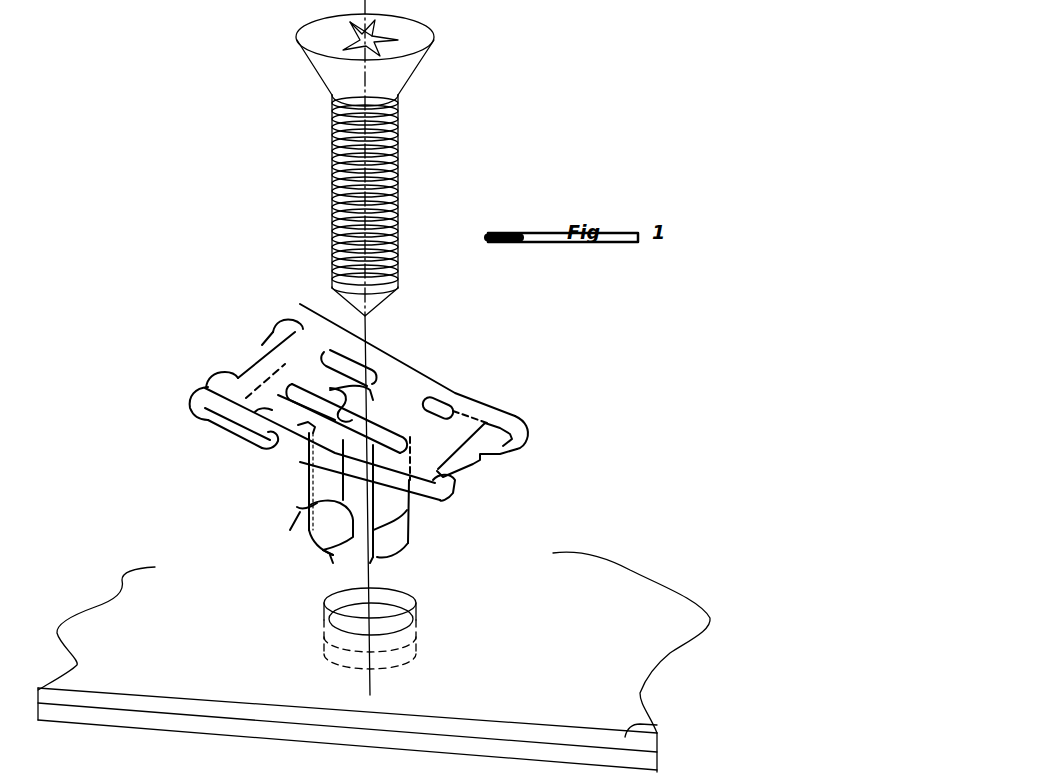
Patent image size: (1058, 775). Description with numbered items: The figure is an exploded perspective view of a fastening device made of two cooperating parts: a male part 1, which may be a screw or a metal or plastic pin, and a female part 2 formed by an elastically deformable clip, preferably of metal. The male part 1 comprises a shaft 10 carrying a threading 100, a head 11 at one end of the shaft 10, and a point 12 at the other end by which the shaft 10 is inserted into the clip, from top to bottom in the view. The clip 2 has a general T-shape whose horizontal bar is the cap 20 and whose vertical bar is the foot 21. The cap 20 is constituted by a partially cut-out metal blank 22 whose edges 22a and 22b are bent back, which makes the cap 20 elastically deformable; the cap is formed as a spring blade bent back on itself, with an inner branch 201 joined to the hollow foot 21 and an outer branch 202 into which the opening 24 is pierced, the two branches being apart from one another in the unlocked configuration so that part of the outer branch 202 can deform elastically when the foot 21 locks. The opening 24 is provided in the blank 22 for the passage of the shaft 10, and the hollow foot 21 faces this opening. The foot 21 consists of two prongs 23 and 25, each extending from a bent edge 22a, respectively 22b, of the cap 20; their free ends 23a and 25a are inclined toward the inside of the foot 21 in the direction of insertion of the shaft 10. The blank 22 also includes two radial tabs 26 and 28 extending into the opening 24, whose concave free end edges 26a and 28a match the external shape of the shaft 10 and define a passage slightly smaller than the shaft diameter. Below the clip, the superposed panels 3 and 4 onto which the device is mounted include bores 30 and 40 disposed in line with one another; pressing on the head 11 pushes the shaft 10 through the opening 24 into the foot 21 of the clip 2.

The male part 1 is at (418, 97).
The head 11 is at (432, 65).
The shaft 10 is at (405, 190).
The threading 100 is at (332, 186).
The point 12 is at (382, 296).
The female part 2 is at (524, 392).
The cap 20 is at (212, 343).
The foot 21 is at (297, 505).
The metal blank 22 is at (387, 360).
The bent edge 22a is at (208, 433).
The bent edge 22b is at (336, 562).
The prong 23 is at (300, 512).
The free end 23a is at (334, 557).
The opening 24 is at (373, 397).
The prong 25 is at (383, 500).
The free end 25a is at (378, 552).
The radial tab 26 is at (280, 372).
The free end edge 26a is at (298, 331).
The radial tab 28 is at (450, 394).
The free end edge 28a is at (412, 390).
The inner branch 201 is at (265, 450).
The outer branch 202 is at (231, 455).
The panel 3 is at (635, 723).
The panel 4 is at (635, 760).
The bore 30 is at (412, 600).
The bore 40 is at (392, 652).